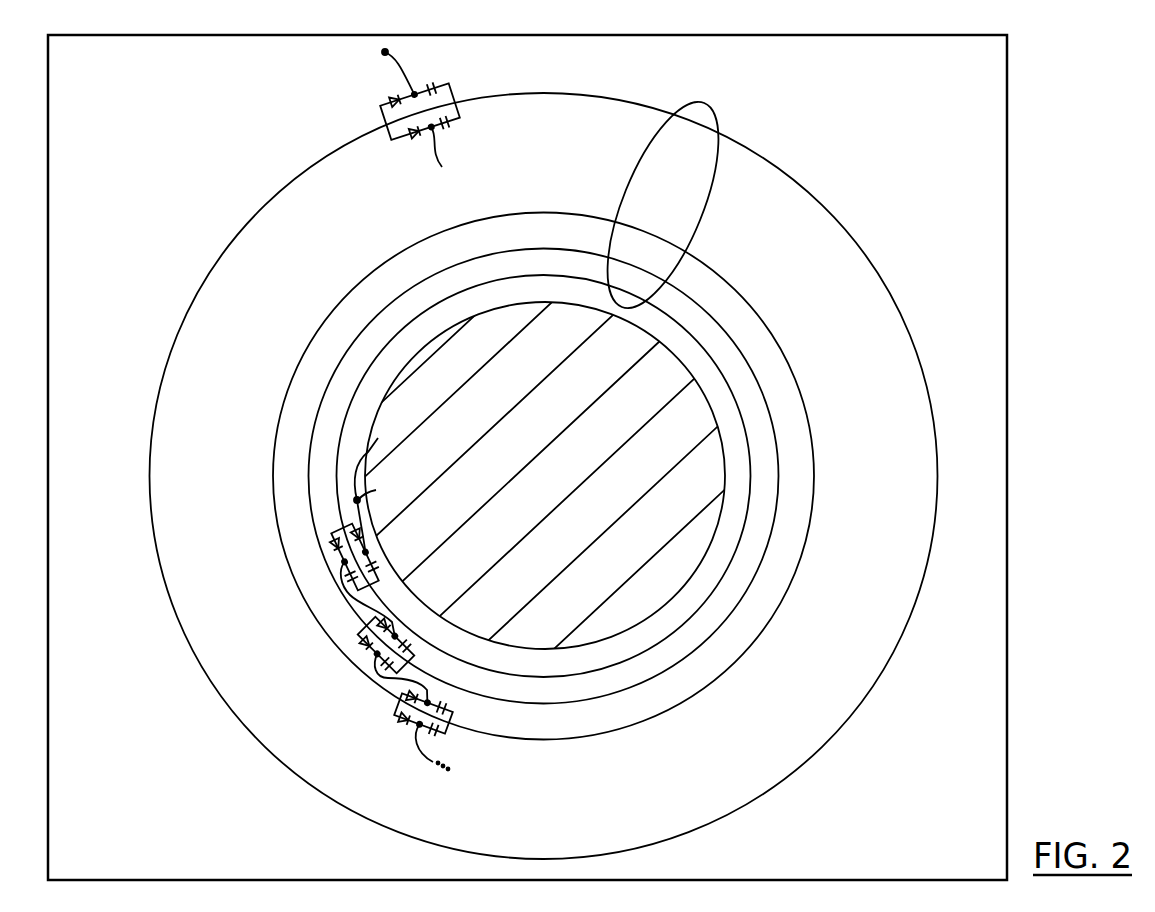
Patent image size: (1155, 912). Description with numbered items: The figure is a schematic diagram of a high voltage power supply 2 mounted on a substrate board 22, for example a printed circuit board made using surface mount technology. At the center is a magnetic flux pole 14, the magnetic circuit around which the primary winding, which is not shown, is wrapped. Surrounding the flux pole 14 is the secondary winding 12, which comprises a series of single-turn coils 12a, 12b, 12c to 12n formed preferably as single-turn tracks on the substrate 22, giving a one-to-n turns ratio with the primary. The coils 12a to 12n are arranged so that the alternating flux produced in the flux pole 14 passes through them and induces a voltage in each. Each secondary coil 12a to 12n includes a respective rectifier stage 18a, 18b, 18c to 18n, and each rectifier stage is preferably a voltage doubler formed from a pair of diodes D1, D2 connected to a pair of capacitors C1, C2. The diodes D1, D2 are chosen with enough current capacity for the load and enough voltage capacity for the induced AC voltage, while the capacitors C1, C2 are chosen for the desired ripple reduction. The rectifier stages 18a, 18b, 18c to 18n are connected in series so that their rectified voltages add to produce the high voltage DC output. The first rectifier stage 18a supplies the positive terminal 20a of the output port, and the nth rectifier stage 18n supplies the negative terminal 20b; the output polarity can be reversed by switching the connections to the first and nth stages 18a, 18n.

The high voltage power supply 2 is at (1074, 52).
The substrate board 22 is at (1007, 117).
The secondary winding 12 is at (713, 107).
The single-turn coil 12a is at (617, 292).
The single-turn coil 12b is at (628, 264).
The single-turn coil 12c is at (636, 226).
The single-turn coil 12n is at (650, 103).
The magnetic flux pole 14 is at (687, 563).
The rectifier stage 18a is at (331, 533).
The rectifier stage 18b is at (358, 634).
The rectifier stage 18c is at (424, 738).
The rectifier stage 18n is at (454, 92).
The positive terminal 20a is at (370, 456).
The negative terminal 20b is at (387, 50).
The diode D1 is at (404, 718).
The diode D2 is at (412, 697).
The capacitor C1 is at (445, 734).
The capacitor C2 is at (442, 707).